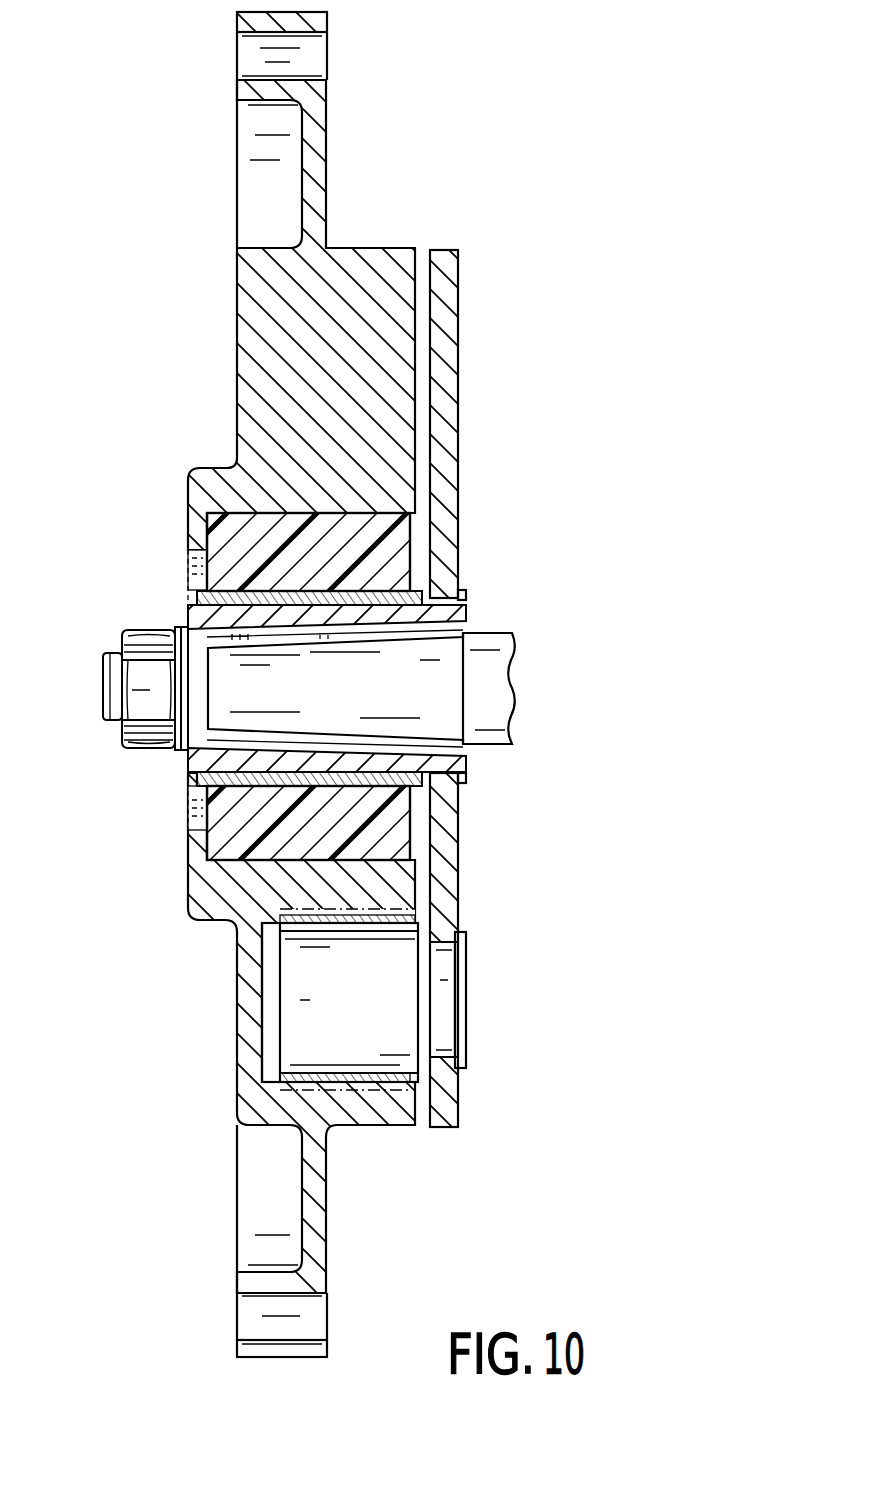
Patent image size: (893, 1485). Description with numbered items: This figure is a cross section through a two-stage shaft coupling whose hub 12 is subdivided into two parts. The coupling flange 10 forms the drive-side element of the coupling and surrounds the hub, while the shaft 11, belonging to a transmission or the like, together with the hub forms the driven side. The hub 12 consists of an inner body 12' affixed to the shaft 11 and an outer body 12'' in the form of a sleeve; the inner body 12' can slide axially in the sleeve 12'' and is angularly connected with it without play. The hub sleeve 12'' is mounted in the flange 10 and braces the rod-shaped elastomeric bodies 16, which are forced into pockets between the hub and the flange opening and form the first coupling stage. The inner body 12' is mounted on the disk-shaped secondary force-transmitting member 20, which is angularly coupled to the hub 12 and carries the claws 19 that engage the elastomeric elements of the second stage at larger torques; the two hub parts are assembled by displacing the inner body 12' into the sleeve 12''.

The coupling flange 10 is at (315, 158).
The secondary force-transmitting member 20 is at (445, 358).
The elastomeric bodies 16 is at (387, 545).
The hub 12 is at (105, 709).
The inner body 12' is at (295, 598).
The outer body 12'' is at (275, 786).
The shaft 11 is at (495, 658).
The claws 19 is at (377, 982).